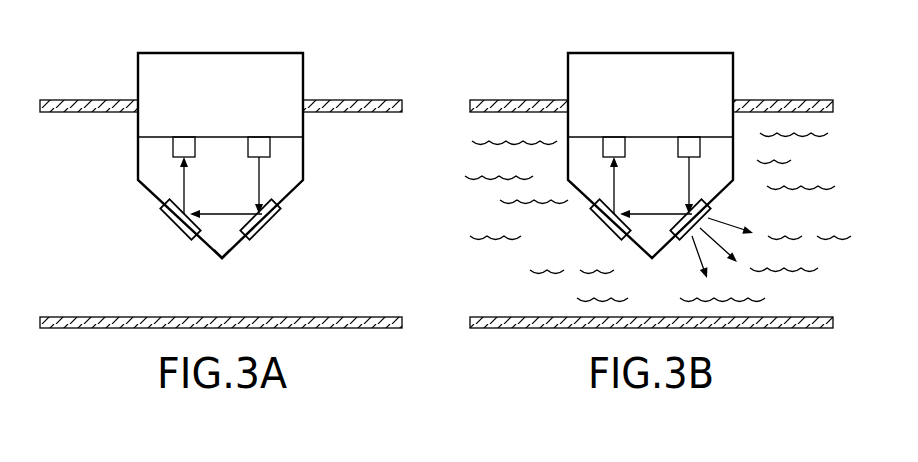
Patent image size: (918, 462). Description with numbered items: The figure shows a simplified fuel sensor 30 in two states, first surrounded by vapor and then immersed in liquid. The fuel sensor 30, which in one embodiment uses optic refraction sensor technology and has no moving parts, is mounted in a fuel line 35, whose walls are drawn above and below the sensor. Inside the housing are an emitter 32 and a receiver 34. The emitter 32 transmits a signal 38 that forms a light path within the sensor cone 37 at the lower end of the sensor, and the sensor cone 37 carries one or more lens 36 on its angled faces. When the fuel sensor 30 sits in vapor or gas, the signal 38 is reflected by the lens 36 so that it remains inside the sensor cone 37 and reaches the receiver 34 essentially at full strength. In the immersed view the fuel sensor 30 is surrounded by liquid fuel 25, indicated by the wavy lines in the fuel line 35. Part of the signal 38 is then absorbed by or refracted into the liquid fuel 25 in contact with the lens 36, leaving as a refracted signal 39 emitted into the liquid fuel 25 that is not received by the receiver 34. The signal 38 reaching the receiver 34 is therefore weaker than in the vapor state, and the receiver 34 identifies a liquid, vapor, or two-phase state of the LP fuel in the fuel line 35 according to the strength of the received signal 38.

In FIG. 3B, the liquid fuel 25 is at (548, 250).
In FIG. 3A, the fuel sensor 30 is at (223, 53).
In FIG. 3B, the fuel sensor 30 is at (653, 53).
In FIG. 3A, the emitter 32 is at (260, 137).
In FIG. 3B, the emitter 32 is at (690, 137).
In FIG. 3A, the receiver 34 is at (183, 137).
In FIG. 3B, the receiver 34 is at (613, 137).
In FIG. 3A, the fuel line 35 is at (93, 100).
In FIG. 3B, the fuel line 35 is at (523, 100).
In FIG. 3A, the lens 36 is at (167, 226).
In FIG. 3A, the sensor cone 37 is at (207, 251).
In FIG. 3A, the signal 38 is at (227, 214).
In FIG. 3B, the refracted signal 39 is at (736, 227).